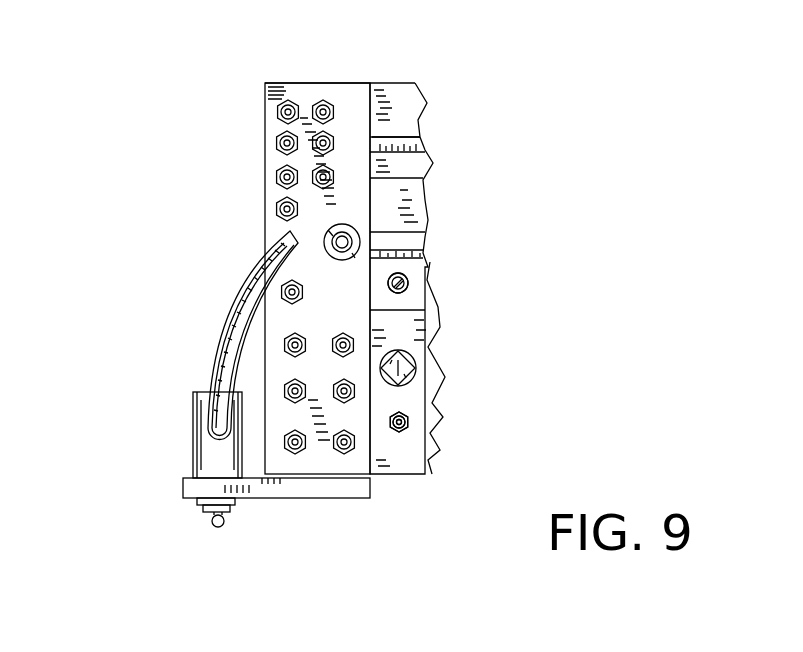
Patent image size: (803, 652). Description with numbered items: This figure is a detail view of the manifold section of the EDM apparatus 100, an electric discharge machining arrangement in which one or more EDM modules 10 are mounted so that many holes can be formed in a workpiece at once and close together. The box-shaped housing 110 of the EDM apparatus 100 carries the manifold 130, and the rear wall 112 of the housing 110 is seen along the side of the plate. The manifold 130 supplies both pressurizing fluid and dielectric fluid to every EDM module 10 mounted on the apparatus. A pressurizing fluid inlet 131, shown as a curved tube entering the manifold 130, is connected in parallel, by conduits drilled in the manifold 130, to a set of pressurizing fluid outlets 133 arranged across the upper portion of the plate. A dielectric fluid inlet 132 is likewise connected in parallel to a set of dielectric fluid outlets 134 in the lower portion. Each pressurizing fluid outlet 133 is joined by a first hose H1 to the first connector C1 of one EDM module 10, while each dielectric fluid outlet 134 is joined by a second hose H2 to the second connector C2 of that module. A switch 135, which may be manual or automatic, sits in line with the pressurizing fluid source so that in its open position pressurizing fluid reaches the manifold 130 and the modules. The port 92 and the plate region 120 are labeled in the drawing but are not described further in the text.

The EDM module 10 is at (412, 503).
The fluid port 92 is at (417, 362).
The EDM apparatus 100 is at (562, 203).
The housing 110 is at (368, 54).
The rear wall 112 is at (398, 98).
The side plate 120 is at (412, 193).
The manifold 130 is at (273, 224).
The pressurizing fluid inlet 131 is at (289, 236).
The dielectric fluid inlet 132 is at (360, 239).
The pressurizing fluid outlets 133 is at (482, 163).
The dielectric fluid outlets 134 is at (332, 388).
The switch 135 is at (212, 522).
The first hose H1 is at (408, 283).
The first connector C1 is at (407, 290).
The second hose H2 is at (409, 418).
The second connector C2 is at (408, 428).